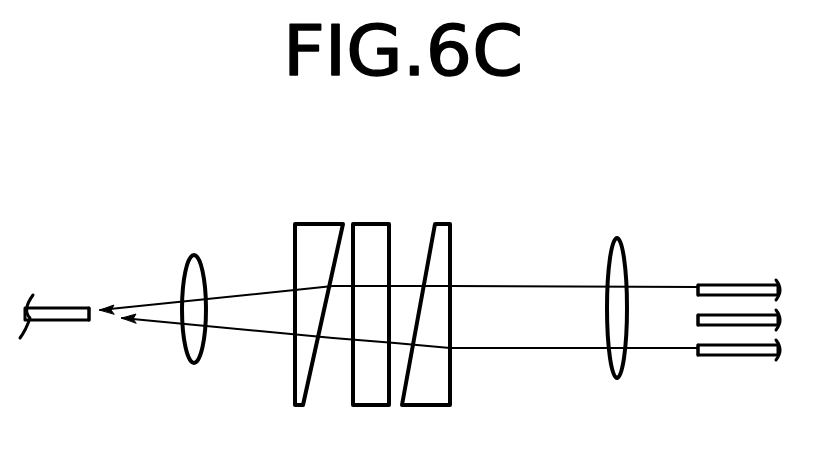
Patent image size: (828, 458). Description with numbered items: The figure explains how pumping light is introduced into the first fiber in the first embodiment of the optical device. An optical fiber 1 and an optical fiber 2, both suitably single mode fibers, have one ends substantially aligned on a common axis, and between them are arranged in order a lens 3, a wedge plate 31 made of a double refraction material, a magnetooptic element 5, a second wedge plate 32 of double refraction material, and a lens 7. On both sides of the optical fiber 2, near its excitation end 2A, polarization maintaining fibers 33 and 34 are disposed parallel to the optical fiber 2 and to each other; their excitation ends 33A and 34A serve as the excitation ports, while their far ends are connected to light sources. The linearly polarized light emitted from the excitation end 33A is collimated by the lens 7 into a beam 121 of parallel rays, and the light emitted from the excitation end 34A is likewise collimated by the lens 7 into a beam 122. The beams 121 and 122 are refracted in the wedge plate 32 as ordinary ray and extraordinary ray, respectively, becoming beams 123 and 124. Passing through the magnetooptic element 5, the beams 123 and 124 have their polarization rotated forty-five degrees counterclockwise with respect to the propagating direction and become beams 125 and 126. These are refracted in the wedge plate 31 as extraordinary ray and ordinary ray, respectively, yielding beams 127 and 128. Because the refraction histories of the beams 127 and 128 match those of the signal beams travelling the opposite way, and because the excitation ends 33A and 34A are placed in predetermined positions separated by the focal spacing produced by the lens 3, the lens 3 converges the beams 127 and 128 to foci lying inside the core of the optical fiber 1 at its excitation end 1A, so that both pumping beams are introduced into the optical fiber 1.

The optical fiber 1 is at (60, 319).
The excitation end of optical fiber 1A is at (95, 320).
The lens 3 is at (187, 268).
The magnetooptic element 5 is at (373, 223).
The lens 7 is at (623, 253).
The optical fiber 2 is at (740, 325).
The excitation end of optical fiber 2A is at (697, 320).
The wedge plate 31 is at (308, 223).
The wedge plate 32 is at (440, 223).
The polarization maintaining fiber 33 is at (751, 284).
The excitation end of polarization maintaining fiber 33A is at (696, 284).
The polarization maintaining fiber 34 is at (747, 357).
The excitation end of polarization maintaining fiber 34A is at (697, 355).
The beam 121 is at (527, 286).
The beam 122 is at (540, 350).
The beam 123 is at (403, 285).
The beam 124 is at (398, 345).
The beam 125 is at (347, 285).
The beam 126 is at (336, 339).
The beam 127 is at (247, 294).
The beam 128 is at (240, 330).